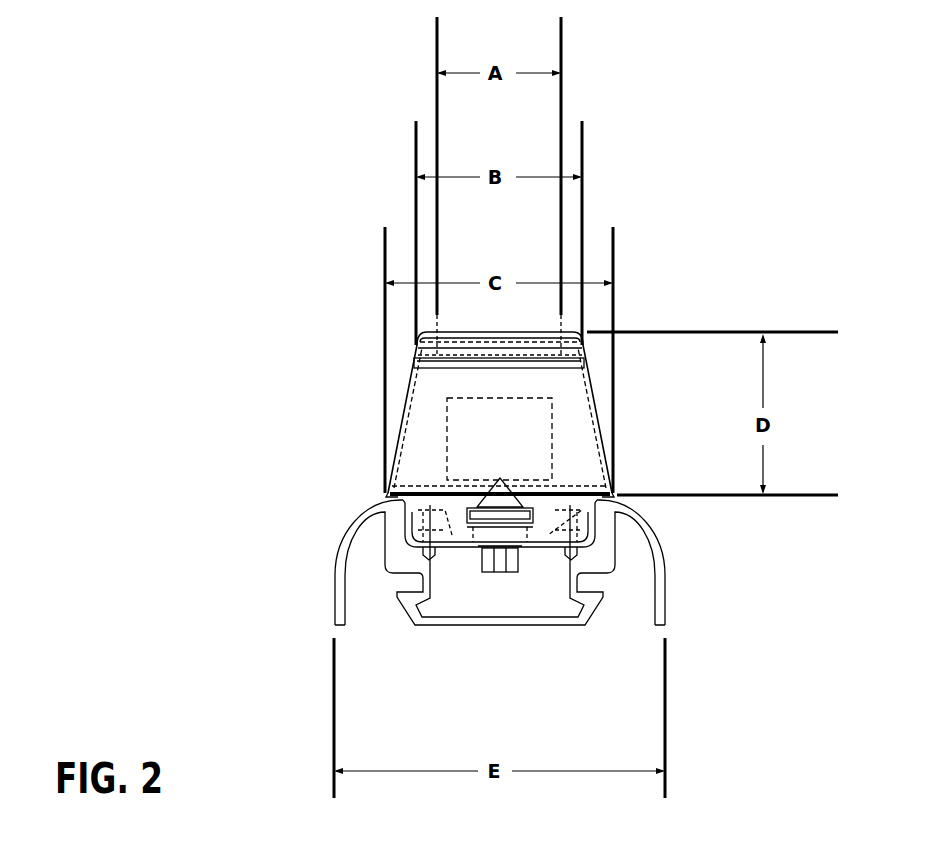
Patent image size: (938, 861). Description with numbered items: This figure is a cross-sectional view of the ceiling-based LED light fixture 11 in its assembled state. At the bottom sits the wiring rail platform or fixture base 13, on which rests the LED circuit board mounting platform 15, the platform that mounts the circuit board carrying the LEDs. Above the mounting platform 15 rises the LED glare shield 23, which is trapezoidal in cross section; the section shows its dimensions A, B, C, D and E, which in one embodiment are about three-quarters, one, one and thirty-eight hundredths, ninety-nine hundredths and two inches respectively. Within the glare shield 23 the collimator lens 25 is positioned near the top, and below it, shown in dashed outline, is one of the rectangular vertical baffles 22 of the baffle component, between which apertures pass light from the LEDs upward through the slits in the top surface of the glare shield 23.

The LED light fixture 11 is at (872, 329).
The fixture base 13 is at (680, 601).
The LED circuit board mounting platform 15 is at (427, 532).
The vertical baffle 22 is at (477, 452).
The LED glare shield 23 is at (407, 428).
The collimator lens 25 is at (437, 365).